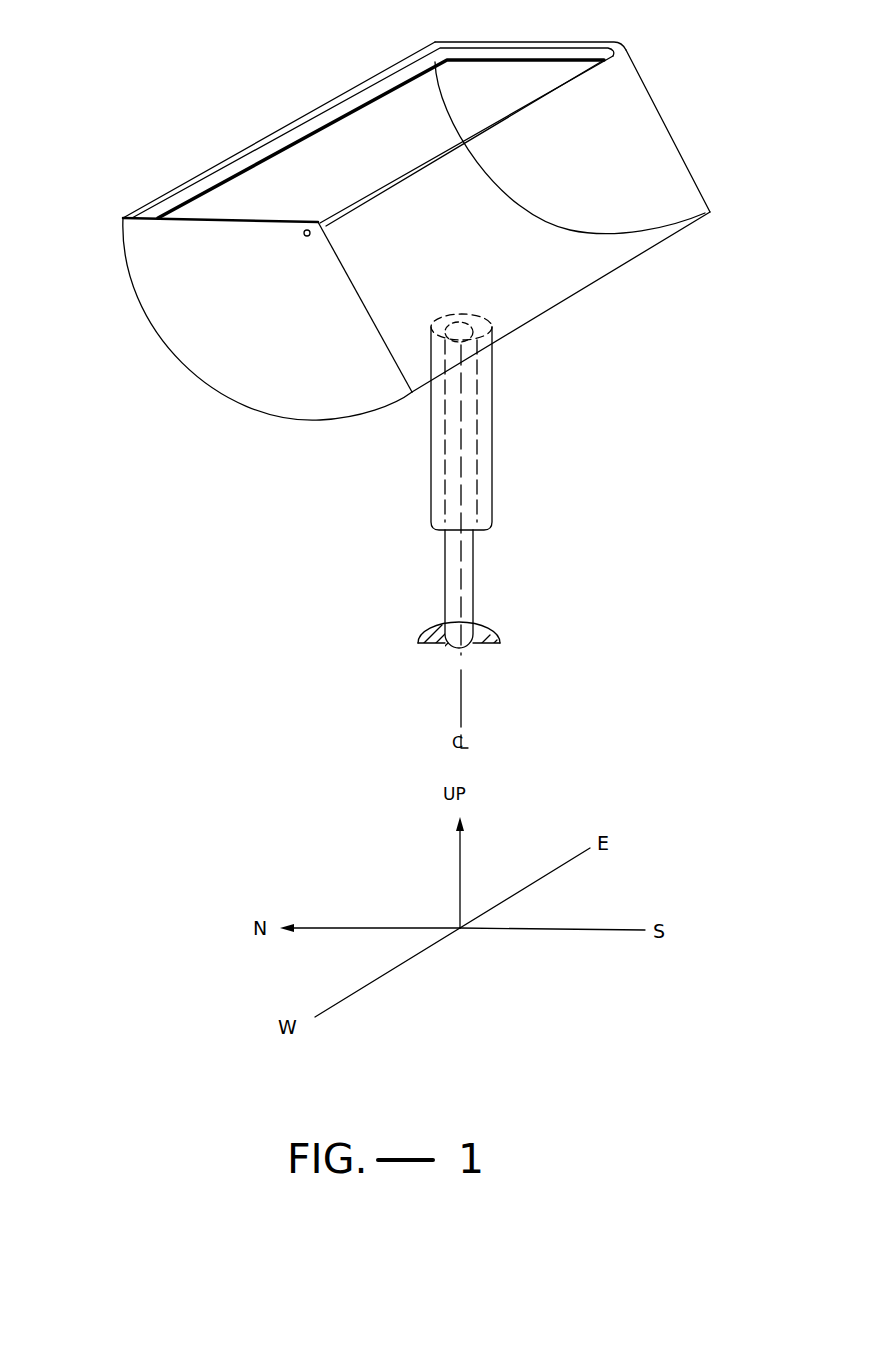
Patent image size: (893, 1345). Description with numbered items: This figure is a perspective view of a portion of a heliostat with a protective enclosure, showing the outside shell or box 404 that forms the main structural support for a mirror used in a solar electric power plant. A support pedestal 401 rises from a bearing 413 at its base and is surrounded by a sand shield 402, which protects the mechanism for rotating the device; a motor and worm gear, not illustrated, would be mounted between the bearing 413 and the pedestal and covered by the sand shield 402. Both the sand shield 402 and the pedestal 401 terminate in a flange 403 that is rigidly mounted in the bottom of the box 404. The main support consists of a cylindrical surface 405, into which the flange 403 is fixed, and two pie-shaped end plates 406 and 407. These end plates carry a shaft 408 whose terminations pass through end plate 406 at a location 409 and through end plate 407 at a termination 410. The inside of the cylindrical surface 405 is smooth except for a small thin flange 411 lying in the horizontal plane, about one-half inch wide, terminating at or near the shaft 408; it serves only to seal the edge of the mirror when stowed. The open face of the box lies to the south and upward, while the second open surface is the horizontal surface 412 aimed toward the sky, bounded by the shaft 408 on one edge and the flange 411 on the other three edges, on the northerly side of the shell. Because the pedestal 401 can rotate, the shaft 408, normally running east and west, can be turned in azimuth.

The support pedestal 401 is at (470, 600).
The sand shield 402 is at (493, 413).
The flange 403 is at (516, 283).
The box 404 is at (160, 357).
The cylindrical surface 405 is at (605, 275).
The end plate 406 is at (672, 137).
The end plate 407 is at (318, 345).
The shaft 408 is at (383, 188).
The location 409 is at (628, 47).
The termination 410 is at (293, 239).
The thin flange 411 is at (277, 140).
The horizontal surface 412 is at (398, 120).
The bearing 413 is at (512, 641).